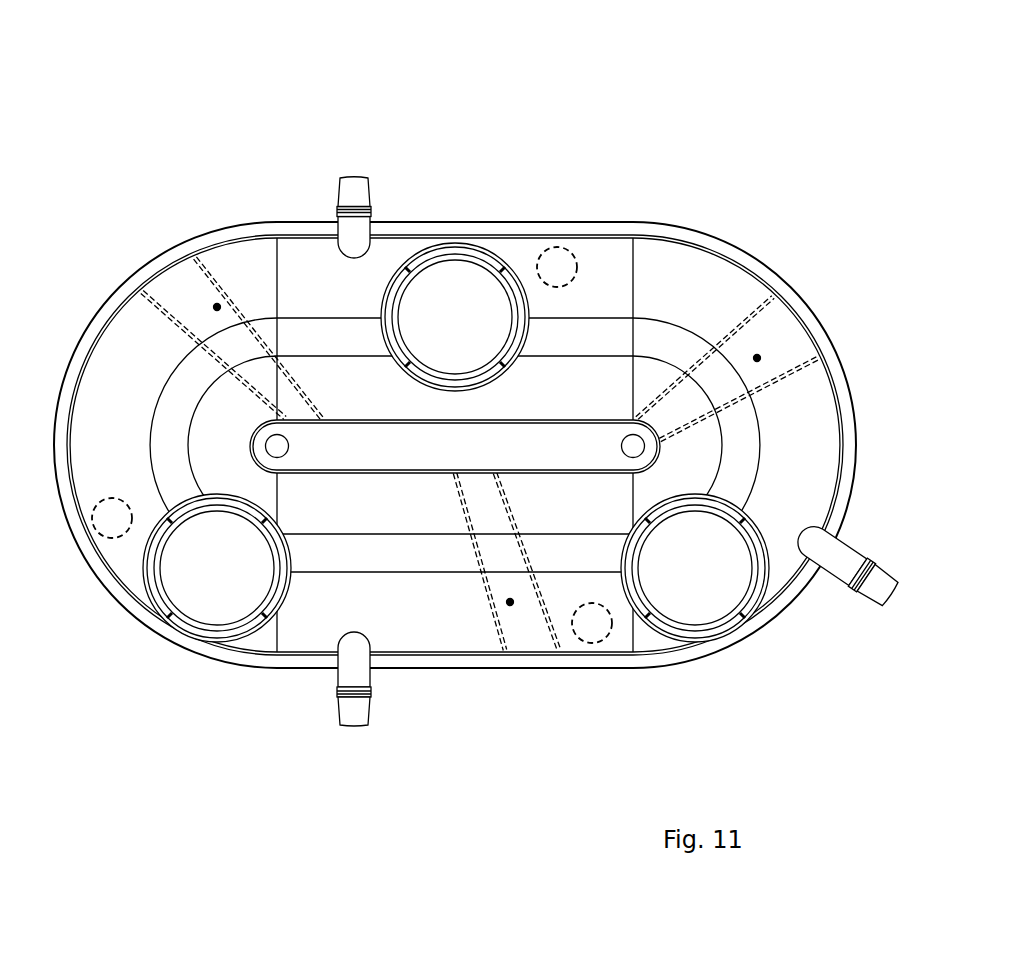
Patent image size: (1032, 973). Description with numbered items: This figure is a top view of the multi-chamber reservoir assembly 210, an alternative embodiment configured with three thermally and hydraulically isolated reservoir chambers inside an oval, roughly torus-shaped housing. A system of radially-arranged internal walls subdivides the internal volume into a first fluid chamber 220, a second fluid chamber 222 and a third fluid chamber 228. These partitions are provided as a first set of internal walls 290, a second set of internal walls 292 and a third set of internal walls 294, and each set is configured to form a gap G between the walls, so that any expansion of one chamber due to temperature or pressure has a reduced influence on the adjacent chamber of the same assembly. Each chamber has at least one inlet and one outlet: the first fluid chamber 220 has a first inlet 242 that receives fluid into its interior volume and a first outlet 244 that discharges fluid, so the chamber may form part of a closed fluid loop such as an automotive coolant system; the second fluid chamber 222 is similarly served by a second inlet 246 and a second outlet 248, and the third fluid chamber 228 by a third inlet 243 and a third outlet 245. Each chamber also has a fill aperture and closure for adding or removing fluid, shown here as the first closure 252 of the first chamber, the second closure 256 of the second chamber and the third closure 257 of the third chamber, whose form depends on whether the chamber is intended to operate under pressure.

The multi-chamber reservoir assembly 210 is at (495, 388).
The first fluid chamber 220 is at (108, 607).
The second fluid chamber 222 is at (857, 503).
The third fluid chamber 228 is at (656, 215).
The first inlet 242 is at (337, 697).
The third inlet 243 is at (372, 207).
The first outlet 244 is at (107, 525).
The third outlet 245 is at (557, 246).
The second inlet 246 is at (853, 590).
The second outlet 248 is at (600, 637).
The first closure 252 is at (213, 615).
The second closure 256 is at (730, 600).
The third closure 257 is at (448, 270).
The first set of internal walls 290 is at (193, 293).
The second set of internal walls 292 is at (533, 633).
The third set of internal walls 294 is at (773, 338).
The gap G is at (217, 307).